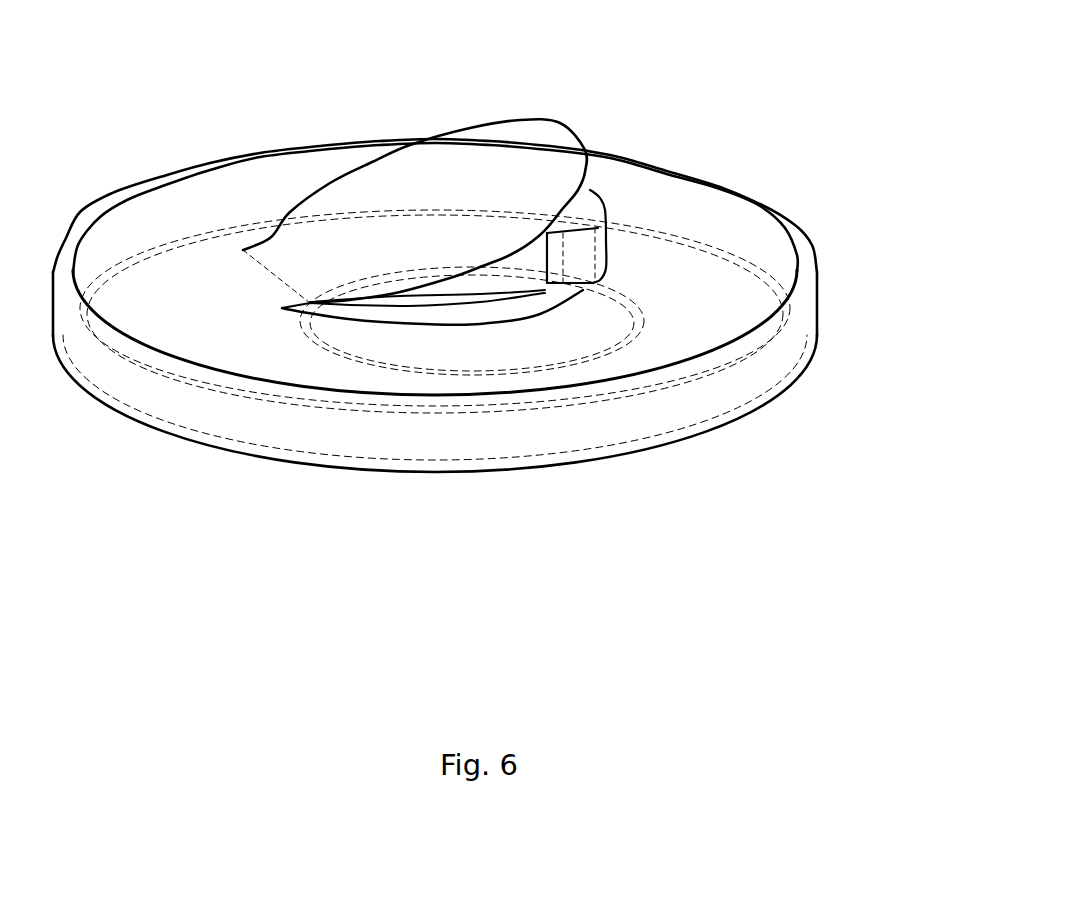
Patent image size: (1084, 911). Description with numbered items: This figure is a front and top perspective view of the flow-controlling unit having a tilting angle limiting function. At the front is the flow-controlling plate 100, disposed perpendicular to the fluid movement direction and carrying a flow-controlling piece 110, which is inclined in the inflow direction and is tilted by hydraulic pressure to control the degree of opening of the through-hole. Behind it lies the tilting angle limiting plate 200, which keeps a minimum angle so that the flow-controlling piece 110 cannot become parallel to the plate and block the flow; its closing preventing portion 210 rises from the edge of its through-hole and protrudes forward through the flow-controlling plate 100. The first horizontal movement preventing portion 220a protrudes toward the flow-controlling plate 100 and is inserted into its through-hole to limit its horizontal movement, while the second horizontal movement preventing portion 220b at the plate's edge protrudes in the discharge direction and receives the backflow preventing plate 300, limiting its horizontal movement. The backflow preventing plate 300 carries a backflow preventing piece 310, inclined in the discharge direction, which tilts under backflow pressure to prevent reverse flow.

The flow-controlling plate 100 is at (741, 201).
The flow-controlling piece 110 is at (463, 163).
The tilting angle limiting plate 200 is at (810, 263).
The closing preventing portion 210 is at (588, 205).
The first horizontal movement preventing portion 220a is at (420, 317).
The second horizontal movement preventing portion 220b is at (177, 428).
The backflow preventing plate 300 is at (800, 377).
The backflow preventing piece 310 is at (573, 410).